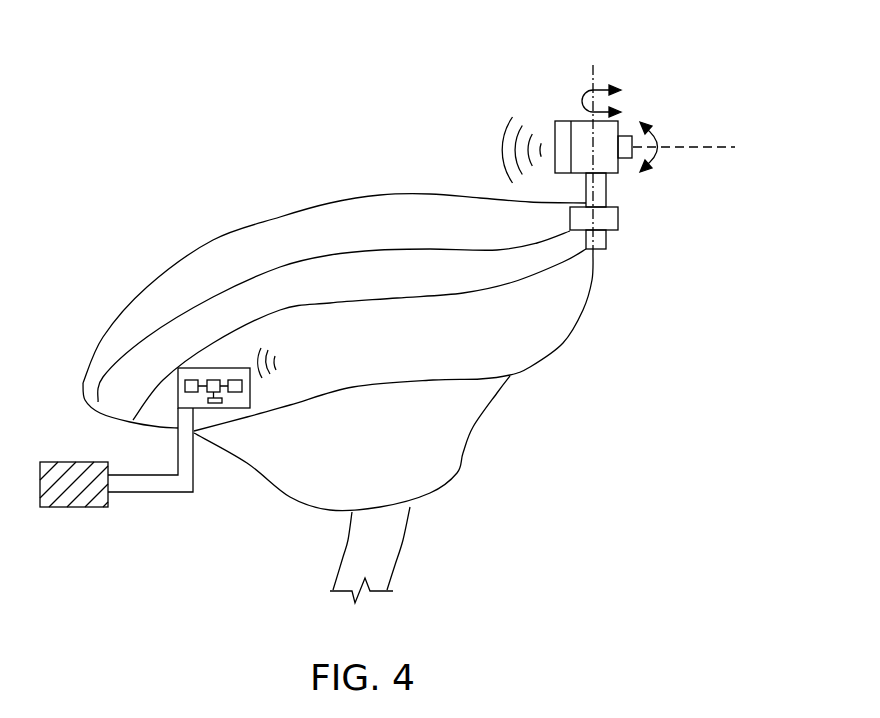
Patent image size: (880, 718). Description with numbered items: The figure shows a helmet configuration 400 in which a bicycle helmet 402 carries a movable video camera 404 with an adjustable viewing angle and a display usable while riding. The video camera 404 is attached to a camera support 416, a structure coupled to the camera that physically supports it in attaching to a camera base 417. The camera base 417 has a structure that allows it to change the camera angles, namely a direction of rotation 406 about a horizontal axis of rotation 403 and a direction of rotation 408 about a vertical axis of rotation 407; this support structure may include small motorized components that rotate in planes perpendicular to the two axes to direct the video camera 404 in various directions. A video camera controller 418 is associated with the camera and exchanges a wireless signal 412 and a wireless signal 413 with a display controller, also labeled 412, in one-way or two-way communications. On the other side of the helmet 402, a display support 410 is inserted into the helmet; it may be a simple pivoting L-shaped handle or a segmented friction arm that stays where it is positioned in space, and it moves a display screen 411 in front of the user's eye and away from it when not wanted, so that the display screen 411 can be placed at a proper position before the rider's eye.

The helmet configuration 400 is at (133, 242).
The helmet 402 is at (360, 223).
The horizontal axis of rotation 403 is at (723, 147).
The video camera 404 is at (623, 123).
The direction of rotation 406 is at (657, 150).
The vertical axis of rotation 407 is at (590, 77).
The direction of rotation 408 is at (582, 100).
The display support 410 is at (148, 493).
The display screen 411 is at (78, 483).
The wireless signal 412 is at (233, 368).
The wireless signal 413 is at (282, 358).
The camera support 416 is at (605, 237).
The camera base 417 is at (608, 217).
The video camera controller 418 is at (558, 121).